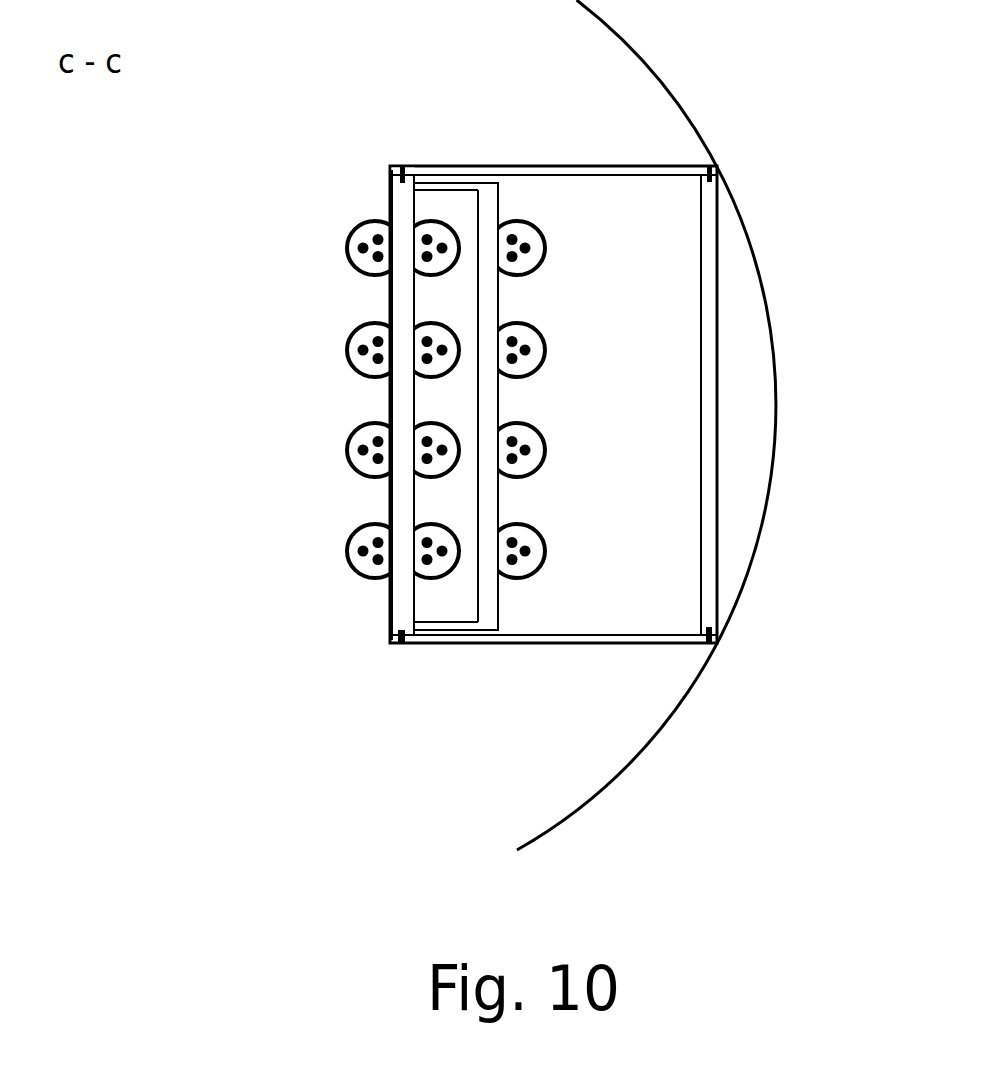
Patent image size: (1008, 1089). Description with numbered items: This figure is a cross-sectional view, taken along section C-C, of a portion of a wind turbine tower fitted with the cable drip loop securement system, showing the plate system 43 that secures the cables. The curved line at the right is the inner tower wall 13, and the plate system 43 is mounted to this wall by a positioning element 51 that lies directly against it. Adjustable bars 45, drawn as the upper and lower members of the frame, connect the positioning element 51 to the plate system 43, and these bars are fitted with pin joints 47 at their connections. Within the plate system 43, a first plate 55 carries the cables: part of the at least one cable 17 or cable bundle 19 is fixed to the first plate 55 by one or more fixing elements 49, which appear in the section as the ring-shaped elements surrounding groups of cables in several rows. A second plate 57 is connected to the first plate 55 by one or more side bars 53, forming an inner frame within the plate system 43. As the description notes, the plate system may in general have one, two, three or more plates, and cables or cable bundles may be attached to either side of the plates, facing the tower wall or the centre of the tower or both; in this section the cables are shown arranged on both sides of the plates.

The inner tower wall 13 is at (777, 387).
The cable 17 is at (358, 450).
The cable bundle 19 is at (342, 333).
The plate system 43 is at (549, 409).
The adjustable bars 45 is at (532, 167).
The pin joints 47 is at (403, 643).
The fixing elements 49 is at (352, 236).
The positioning element 51 is at (718, 497).
The side bars 53 is at (511, 354).
The first plate 55 is at (388, 512).
The second plate 57 is at (500, 395).